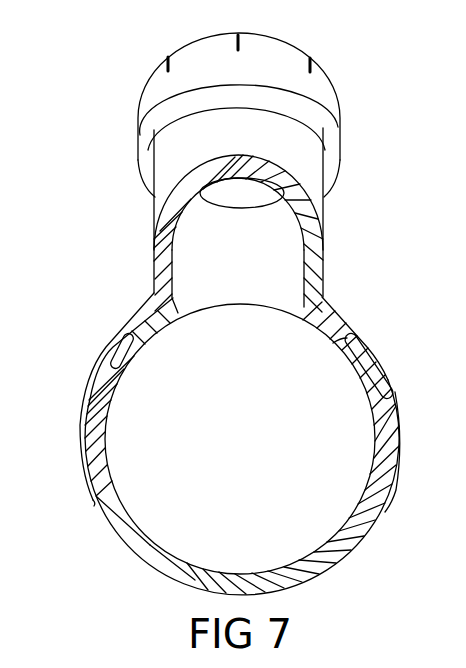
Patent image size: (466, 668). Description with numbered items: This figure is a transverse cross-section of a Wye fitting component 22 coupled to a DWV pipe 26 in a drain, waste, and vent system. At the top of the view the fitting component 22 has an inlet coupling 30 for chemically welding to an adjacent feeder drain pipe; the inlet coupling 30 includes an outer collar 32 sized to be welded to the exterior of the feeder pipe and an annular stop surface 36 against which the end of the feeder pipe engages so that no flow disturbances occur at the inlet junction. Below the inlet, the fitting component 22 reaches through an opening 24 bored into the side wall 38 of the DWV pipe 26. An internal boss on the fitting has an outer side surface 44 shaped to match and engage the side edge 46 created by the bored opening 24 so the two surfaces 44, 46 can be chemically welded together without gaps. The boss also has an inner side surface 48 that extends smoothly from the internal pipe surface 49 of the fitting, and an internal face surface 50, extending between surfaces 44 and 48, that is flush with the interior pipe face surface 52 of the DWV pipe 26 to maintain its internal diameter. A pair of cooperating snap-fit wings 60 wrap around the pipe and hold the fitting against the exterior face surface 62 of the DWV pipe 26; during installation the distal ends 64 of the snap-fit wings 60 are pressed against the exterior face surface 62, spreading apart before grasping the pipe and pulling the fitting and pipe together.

The Wye fitting component 22 is at (153, 213).
The opening 24 is at (100, 377).
The DWV pipe 26 is at (352, 550).
The inlet coupling 30 is at (320, 60).
The outer collar 32 is at (338, 124).
The annular stop surface 36 is at (238, 208).
The side wall 38 is at (372, 512).
The outer side surface 44 is at (357, 347).
The side edge 46 is at (340, 342).
The inner side surface 48 is at (182, 309).
The internal pipe surface 49 is at (257, 287).
The internal face surface 50 is at (162, 337).
The interior pipe face surface 52 is at (143, 532).
The snap-fit wings 60 is at (80, 417).
The exterior face surface 62 is at (170, 577).
The distal ends 64 is at (93, 507).